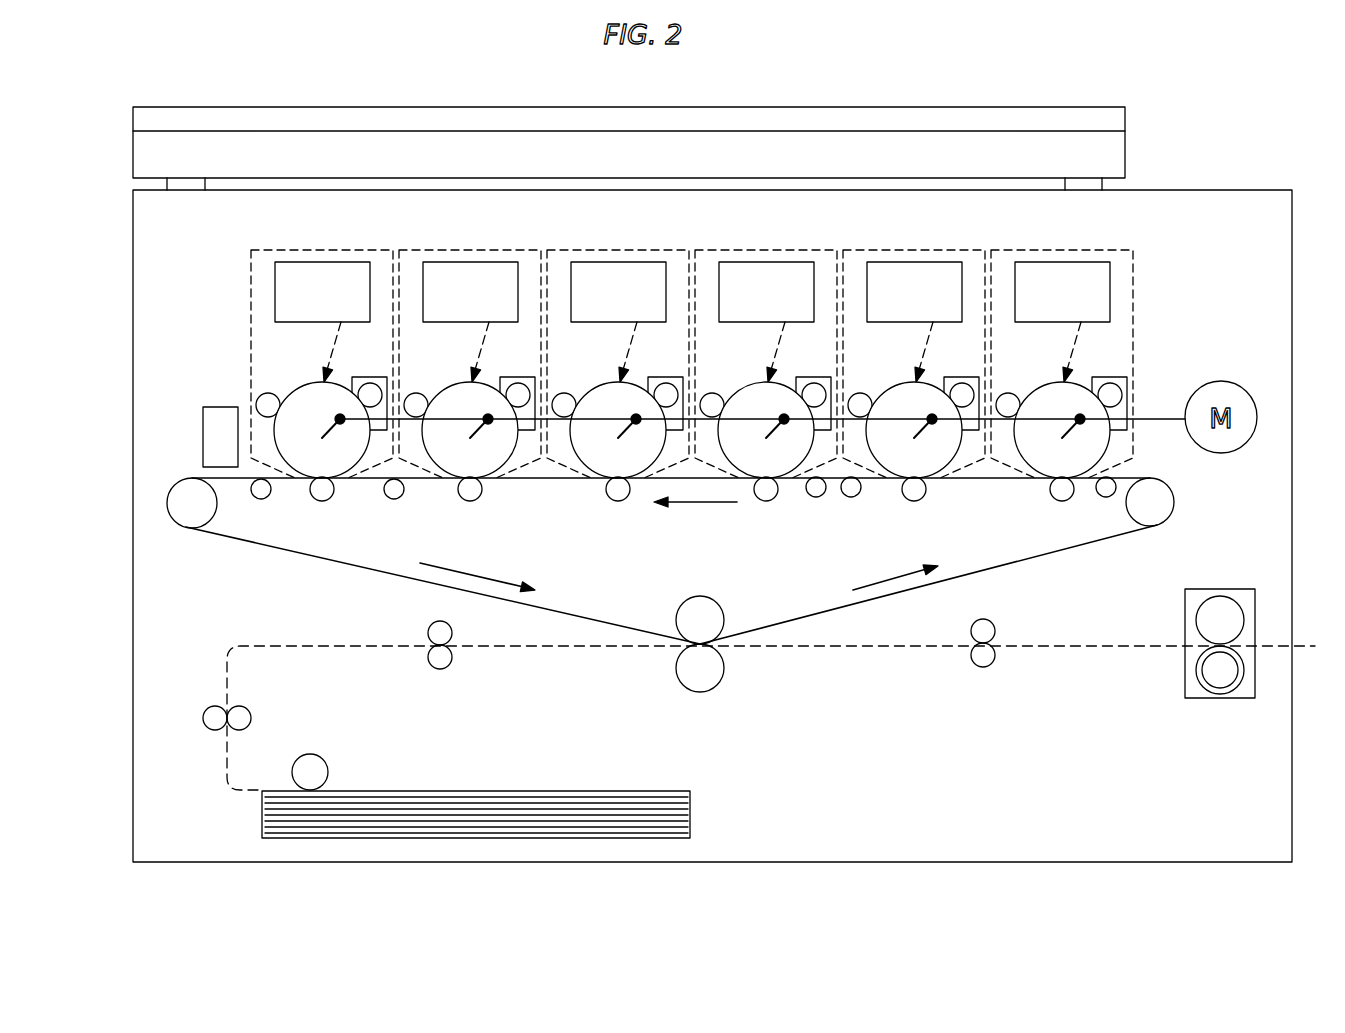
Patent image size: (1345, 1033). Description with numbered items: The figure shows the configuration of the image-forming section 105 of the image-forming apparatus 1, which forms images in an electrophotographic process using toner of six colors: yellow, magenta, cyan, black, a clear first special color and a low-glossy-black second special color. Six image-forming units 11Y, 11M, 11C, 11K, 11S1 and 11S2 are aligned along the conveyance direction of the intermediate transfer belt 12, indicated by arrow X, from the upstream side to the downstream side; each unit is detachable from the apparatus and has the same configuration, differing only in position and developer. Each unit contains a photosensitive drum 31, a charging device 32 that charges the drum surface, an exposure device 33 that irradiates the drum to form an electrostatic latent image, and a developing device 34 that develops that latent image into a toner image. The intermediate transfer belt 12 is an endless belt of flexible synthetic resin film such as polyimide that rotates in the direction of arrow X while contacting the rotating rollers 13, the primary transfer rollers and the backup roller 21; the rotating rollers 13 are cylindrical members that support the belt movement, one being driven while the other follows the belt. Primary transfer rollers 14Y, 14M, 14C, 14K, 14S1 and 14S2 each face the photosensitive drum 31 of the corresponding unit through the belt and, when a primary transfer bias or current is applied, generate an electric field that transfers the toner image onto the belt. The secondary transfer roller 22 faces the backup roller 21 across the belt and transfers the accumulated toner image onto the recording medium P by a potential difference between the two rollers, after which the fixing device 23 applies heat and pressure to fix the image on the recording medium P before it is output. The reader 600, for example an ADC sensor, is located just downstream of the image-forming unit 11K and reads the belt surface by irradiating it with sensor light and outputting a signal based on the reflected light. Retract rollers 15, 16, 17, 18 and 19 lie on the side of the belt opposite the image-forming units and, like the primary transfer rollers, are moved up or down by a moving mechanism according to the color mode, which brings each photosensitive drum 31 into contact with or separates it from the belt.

The image-forming apparatus 1 is at (1277, 156).
The image-forming section 105 is at (1195, 190).
The image-forming unit (black) 11K is at (342, 250).
The image-forming unit (cyan) 11C is at (490, 250).
The image-forming unit (magenta) 11M is at (638, 250).
The image-forming unit (yellow) 11Y is at (786, 250).
The image-forming unit (second special color) 11S2 is at (934, 250).
The image-forming unit (first special color) 11S1 is at (1082, 250).
The photosensitive drum 31 is at (308, 382).
The charging device 32 is at (260, 395).
The exposure device 33 is at (275, 290).
The developing device 34 is at (372, 377).
The reader 600 is at (203, 430).
The intermediate transfer belt 12 is at (325, 562).
The rotating rollers 13 is at (184, 528).
The retract roller 19 is at (263, 499).
The retract roller 18 is at (395, 499).
The retract roller 17 is at (816, 497).
The retract roller 16 is at (851, 497).
The retract roller 15 is at (1106, 497).
The primary transfer roller (black) 14K is at (322, 501).
The primary transfer roller (cyan) 14C is at (470, 501).
The primary transfer roller (magenta) 14M is at (619, 501).
The primary transfer roller (yellow) 14Y is at (766, 501).
The primary transfer roller (second special color) 14S2 is at (914, 501).
The primary transfer roller (first special color) 14S1 is at (1057, 499).
The backup roller 21 is at (718, 607).
The secondary transfer roller 22 is at (722, 670).
The fixing device 23 is at (1222, 699).
The recording medium P is at (505, 791).
The arrow (conveyance direction) X is at (695, 520).